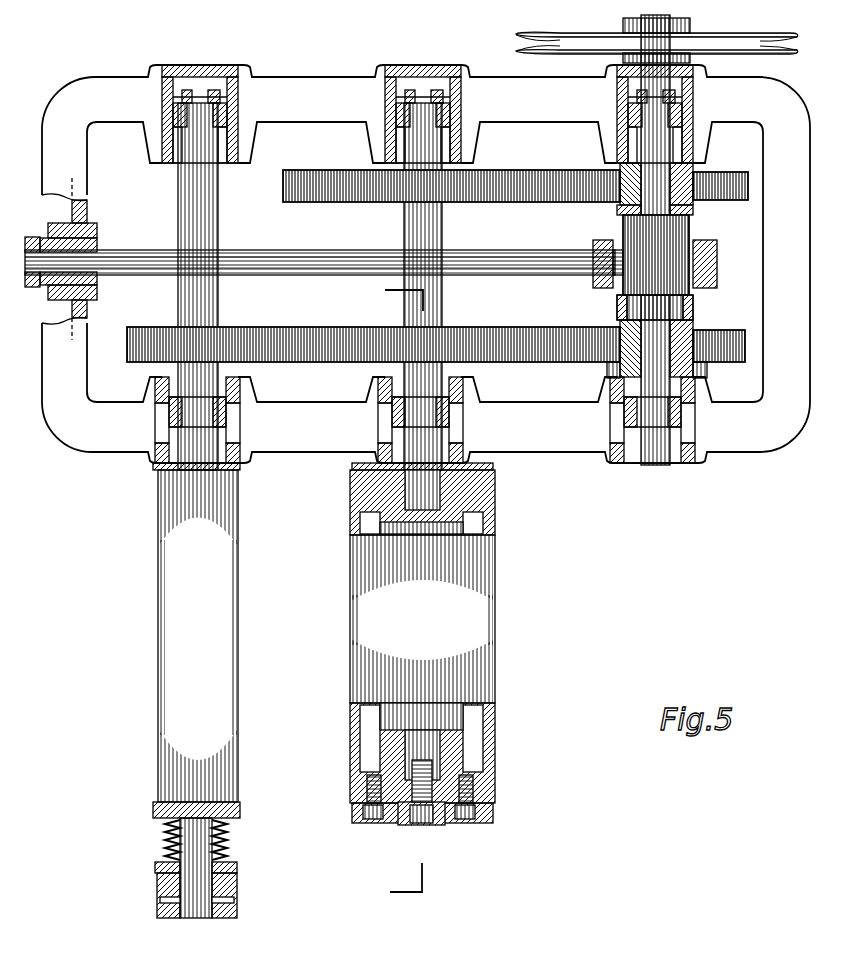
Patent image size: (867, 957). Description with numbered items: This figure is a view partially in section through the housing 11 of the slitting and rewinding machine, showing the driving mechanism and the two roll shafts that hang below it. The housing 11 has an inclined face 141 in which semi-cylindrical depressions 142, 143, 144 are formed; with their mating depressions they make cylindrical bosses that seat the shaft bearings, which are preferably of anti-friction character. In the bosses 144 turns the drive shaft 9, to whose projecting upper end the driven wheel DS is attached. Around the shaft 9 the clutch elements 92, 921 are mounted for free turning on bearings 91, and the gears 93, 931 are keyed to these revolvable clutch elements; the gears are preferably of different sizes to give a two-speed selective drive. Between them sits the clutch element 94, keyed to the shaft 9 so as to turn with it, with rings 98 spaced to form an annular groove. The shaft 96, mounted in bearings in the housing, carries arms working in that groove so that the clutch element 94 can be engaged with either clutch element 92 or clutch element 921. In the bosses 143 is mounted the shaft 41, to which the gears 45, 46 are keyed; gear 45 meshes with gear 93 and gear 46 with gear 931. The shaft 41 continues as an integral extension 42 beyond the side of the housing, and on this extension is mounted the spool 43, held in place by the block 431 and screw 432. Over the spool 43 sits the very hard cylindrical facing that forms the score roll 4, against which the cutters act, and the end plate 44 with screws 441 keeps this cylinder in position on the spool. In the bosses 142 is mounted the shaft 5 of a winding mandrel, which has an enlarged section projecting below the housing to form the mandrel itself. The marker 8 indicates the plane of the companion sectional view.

The housing 11 is at (325, 137).
The inclined face 141 is at (97, 92).
The semi-cylindrical depression 142 is at (200, 83).
The semi-cylindrical depression 143 is at (430, 86).
The semi-cylindrical depression 144 is at (610, 93).
The driven wheel DS is at (558, 33).
The bearing 91 is at (705, 167).
The gear 93 is at (748, 187).
The clutch element 92 is at (693, 215).
The clutch element 94 is at (680, 234).
The ring of the clutch member 98 is at (620, 253).
The clutch element 921 is at (695, 305).
The gear 931 is at (745, 347).
The gear 45 is at (283, 190).
The gear 46 is at (350, 327).
The shaft 96 is at (258, 262).
The shaft 41 is at (420, 224).
The section line 8— 8 is at (390, 892).
The drive shaft 9 is at (653, 463).
The shaft 5 is at (200, 596).
The score roll 4 is at (468, 596).
The spool 43 is at (355, 468).
The extension 42 is at (420, 497).
The end plate 44 is at (392, 823).
The screw 441 is at (372, 823).
The block 431 is at (440, 823).
The screw 432 is at (412, 823).